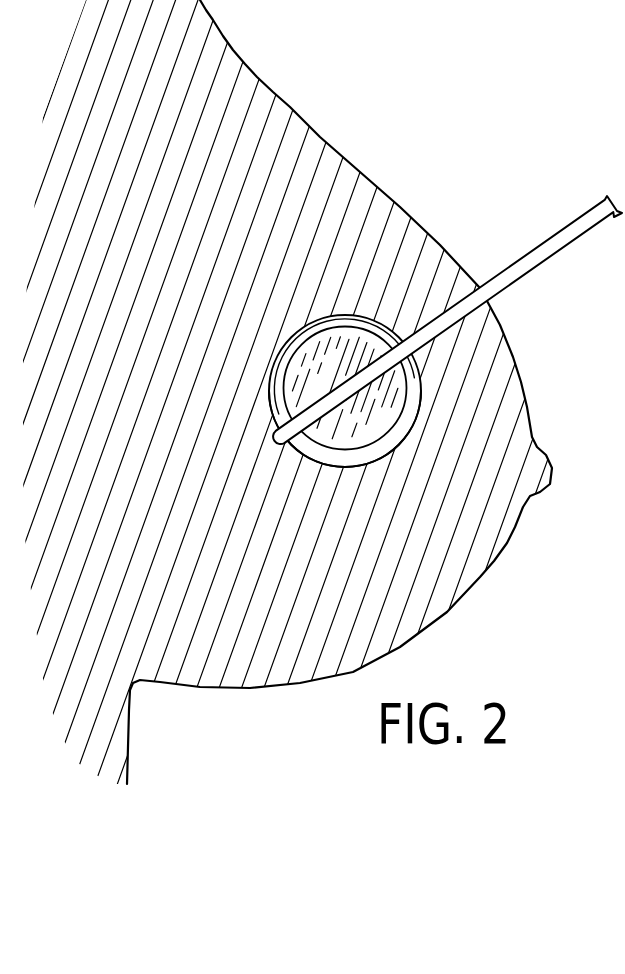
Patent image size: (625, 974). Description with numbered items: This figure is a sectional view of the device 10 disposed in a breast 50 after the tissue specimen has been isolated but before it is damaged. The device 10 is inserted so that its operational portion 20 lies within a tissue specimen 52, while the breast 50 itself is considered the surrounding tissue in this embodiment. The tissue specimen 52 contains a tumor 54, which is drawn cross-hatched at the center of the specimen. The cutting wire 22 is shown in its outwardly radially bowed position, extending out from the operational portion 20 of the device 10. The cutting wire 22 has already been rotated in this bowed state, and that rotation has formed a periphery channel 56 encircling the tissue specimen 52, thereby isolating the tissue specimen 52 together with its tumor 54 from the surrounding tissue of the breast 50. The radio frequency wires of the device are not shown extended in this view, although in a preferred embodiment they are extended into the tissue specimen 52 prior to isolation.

The breast 50 is at (292, 106).
The device 10 is at (532, 247).
The operational portion 20 is at (312, 468).
The cutting wire 22 is at (268, 390).
The tissue specimen 52 is at (411, 388).
The tumor 54 is at (332, 345).
The periphery channel 56 is at (385, 447).